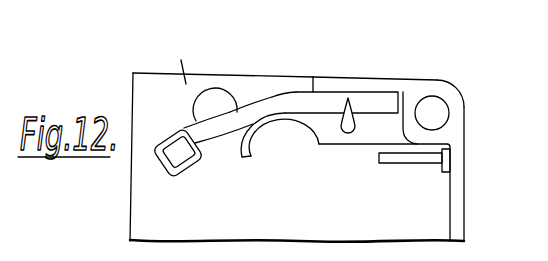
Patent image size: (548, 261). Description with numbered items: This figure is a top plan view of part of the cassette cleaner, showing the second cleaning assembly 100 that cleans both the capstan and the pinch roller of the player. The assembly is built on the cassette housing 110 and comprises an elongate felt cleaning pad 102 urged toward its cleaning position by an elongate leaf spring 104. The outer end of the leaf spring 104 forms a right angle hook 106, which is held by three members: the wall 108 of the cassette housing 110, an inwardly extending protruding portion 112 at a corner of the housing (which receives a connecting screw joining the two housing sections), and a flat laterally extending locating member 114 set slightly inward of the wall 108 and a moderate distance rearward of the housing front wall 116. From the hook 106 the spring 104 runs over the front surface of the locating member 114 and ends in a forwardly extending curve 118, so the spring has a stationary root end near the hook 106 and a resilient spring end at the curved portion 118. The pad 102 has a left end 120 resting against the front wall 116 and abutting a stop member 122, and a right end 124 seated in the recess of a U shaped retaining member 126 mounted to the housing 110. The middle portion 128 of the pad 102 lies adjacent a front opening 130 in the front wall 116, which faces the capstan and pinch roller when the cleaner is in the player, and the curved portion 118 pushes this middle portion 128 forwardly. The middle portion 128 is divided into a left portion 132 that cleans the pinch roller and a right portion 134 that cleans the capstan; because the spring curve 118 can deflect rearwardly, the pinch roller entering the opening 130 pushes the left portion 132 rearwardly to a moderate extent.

The second cleaning assembly 100 is at (357, 44).
The elongate felt cleaning pad 102 is at (219, 138).
The elongate leaf spring 104 is at (352, 147).
The right angle hook 106 is at (451, 160).
The right wall 108 is at (464, 208).
The cassette housing 110 is at (134, 188).
The inwardly extending protruding portion 112 is at (418, 141).
The flat laterally extending locating member 114 is at (414, 164).
The front wall 116 is at (387, 90).
The forwardly extending curve 118 is at (262, 137).
The left end 120 is at (323, 100).
The stop member 122 is at (365, 93).
The right end 124 is at (160, 130).
The U shaped retaining member 126 is at (170, 178).
The middle portion 128 is at (257, 101).
The front opening 130 is at (163, 63).
The left portion 132 is at (283, 88).
The right portion 134 is at (246, 99).